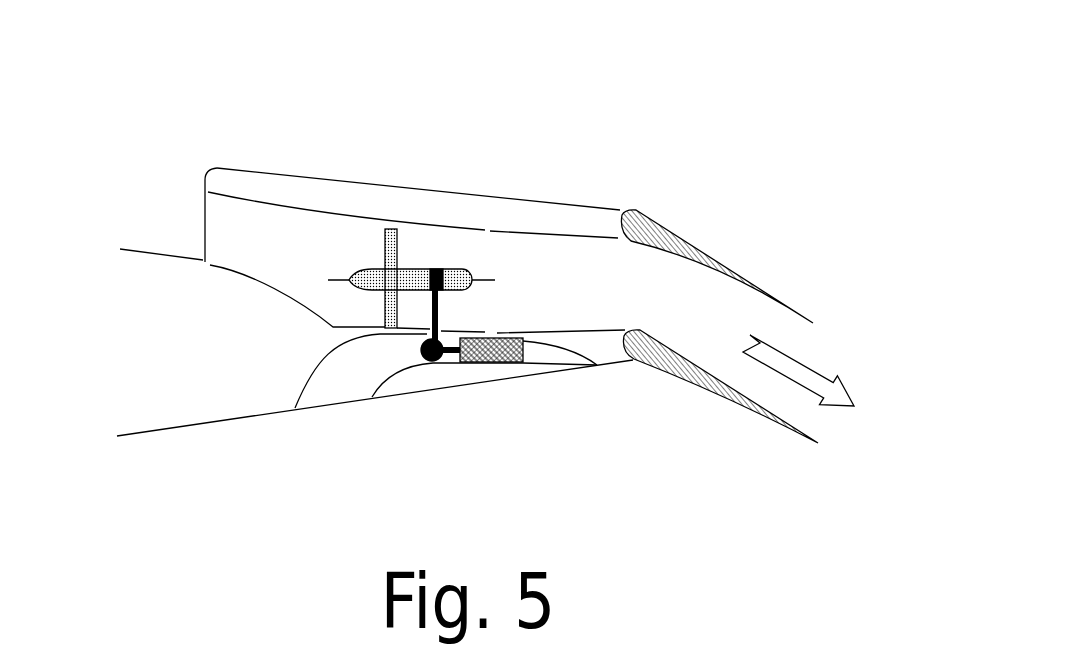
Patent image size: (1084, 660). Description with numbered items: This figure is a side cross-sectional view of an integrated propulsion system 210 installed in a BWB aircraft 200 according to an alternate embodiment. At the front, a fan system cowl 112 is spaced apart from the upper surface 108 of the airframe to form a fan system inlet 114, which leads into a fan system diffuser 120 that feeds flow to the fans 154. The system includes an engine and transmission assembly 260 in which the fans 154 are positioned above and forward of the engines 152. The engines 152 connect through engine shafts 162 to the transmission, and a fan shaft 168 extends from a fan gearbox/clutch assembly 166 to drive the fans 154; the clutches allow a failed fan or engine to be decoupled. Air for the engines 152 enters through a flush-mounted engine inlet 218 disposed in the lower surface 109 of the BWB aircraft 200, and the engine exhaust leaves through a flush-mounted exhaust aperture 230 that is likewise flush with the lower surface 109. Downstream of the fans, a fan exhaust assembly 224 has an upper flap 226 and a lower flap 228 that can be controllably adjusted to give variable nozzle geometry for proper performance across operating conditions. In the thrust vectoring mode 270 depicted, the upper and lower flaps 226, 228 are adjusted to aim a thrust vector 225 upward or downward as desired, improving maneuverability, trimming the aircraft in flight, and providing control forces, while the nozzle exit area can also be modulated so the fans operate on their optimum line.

The upper surface 108 is at (150, 250).
The lower surface 109 is at (163, 431).
The fan system cowl 112 is at (247, 172).
The fan system inlet 114 is at (185, 207).
The fan system diffuser 120 is at (267, 256).
The engines 152 is at (507, 357).
The fans 154 is at (390, 278).
The engine shafts 162 is at (448, 355).
The fan gearbox/clutch assemblies 166 is at (438, 360).
The fan shaft 168 is at (438, 317).
The BWB aircraft 200 is at (153, 512).
The integrated propulsion system 210 is at (150, 77).
The flush-mounted engine inlet 218 is at (332, 415).
The fan exhaust assembly 224 is at (812, 243).
The thrust vector 225 is at (813, 380).
The upper flap 226 is at (341, 381).
The lower flap 228 is at (695, 395).
The flush-mounted exhaust aperture 230 is at (585, 378).
The engine and transmission assembly 260 is at (532, 187).
The thrust vectoring mode 270 is at (868, 243).